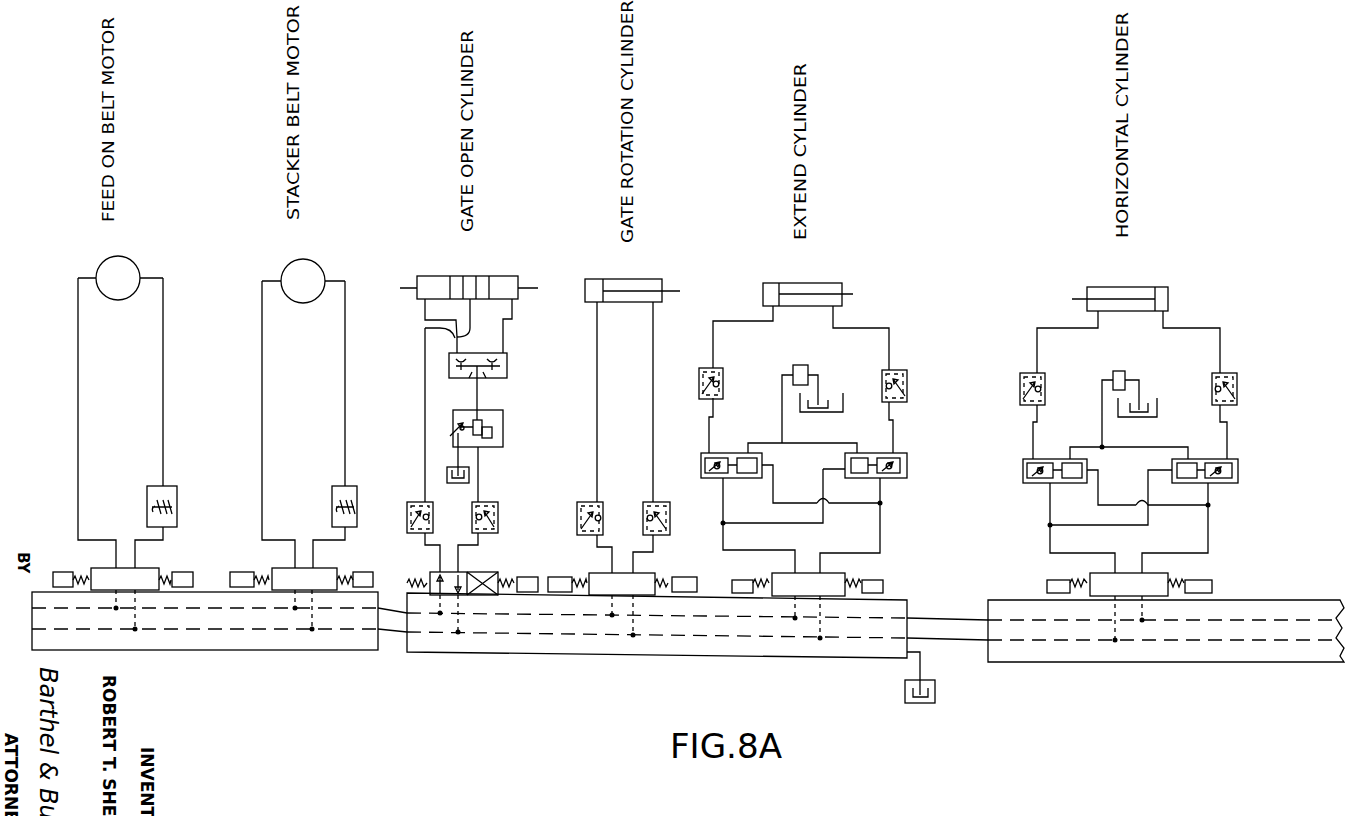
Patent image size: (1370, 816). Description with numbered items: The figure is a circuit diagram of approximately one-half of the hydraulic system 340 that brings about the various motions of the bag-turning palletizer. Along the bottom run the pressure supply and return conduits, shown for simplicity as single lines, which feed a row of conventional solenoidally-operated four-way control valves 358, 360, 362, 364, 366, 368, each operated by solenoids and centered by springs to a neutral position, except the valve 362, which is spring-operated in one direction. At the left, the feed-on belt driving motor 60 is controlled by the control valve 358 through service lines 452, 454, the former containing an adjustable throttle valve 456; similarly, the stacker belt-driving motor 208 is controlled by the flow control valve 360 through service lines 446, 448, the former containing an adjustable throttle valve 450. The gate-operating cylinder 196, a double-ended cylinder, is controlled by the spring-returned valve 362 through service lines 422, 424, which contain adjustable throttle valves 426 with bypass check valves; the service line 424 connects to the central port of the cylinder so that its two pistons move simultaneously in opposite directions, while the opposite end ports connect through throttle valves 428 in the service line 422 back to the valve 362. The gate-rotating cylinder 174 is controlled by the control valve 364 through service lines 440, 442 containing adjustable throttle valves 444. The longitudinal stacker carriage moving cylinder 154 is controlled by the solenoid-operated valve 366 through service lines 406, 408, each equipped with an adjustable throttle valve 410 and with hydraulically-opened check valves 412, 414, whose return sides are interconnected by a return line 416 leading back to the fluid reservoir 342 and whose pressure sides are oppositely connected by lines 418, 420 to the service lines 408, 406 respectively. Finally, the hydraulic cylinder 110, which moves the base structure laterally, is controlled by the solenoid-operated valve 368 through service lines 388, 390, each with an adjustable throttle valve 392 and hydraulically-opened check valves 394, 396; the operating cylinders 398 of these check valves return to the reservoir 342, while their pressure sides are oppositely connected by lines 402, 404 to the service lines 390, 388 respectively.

The feed-on belt driving motor 60 is at (122, 260).
The stacker belt-driving motor 208 is at (303, 262).
The gate-operating cylinder 196 is at (472, 274).
The gate-rotating cylinder 174 is at (618, 276).
The longitudinal stacker carriage moving cylinder 154 is at (799, 283).
The hydraulic cylinder 110 is at (1115, 287).
The service line 422 is at (425, 312).
The service line 424 is at (425, 365).
The throttle valves 428 is at (460, 378).
The adjustable throttle valves 426 is at (413, 480).
The spring-returned solenoidal valve 362 is at (500, 571).
The adjustable throttle valves 444 is at (578, 515).
The service line 442 is at (610, 558).
The service line 440 is at (634, 559).
The control valve 364 is at (637, 593).
The adjustable throttle valve 410 is at (722, 384).
The hydraulic fluid tank 342 is at (852, 385).
The return line 416 is at (758, 442).
The hydraulically-opened check valve 414 is at (701, 467).
The hydraulically-opened check valve 412 is at (905, 470).
The line 418 is at (824, 482).
The line 420 is at (848, 505).
The service line 408 is at (723, 545).
The service line 406 is at (880, 526).
The solenoid-operated valve 366 is at (823, 593).
The adjustable throttle valve 392 is at (1020, 393).
The line 402 is at (1111, 447).
The hydraulically-opened check valve 396 is at (1023, 477).
The hydraulically-opened check valve 394 is at (1238, 472).
The operating cylinders 398 is at (1070, 483).
The line 404 is at (1114, 505).
The service line 390 is at (1050, 548).
The service line 388 is at (1210, 531).
The solenoid-operated valve 368 is at (1143, 593).
The hydraulic system 340 is at (1257, 598).
The control valve 358 is at (140, 588).
The flow control valve 360 is at (320, 588).
The adjustable throttle valve 456 is at (147, 496).
The adjustable throttle valve 450 is at (332, 496).
The service line 454 is at (115, 553).
The service line 452 is at (136, 553).
The service line 448 is at (293, 553).
The service line 446 is at (313, 553).